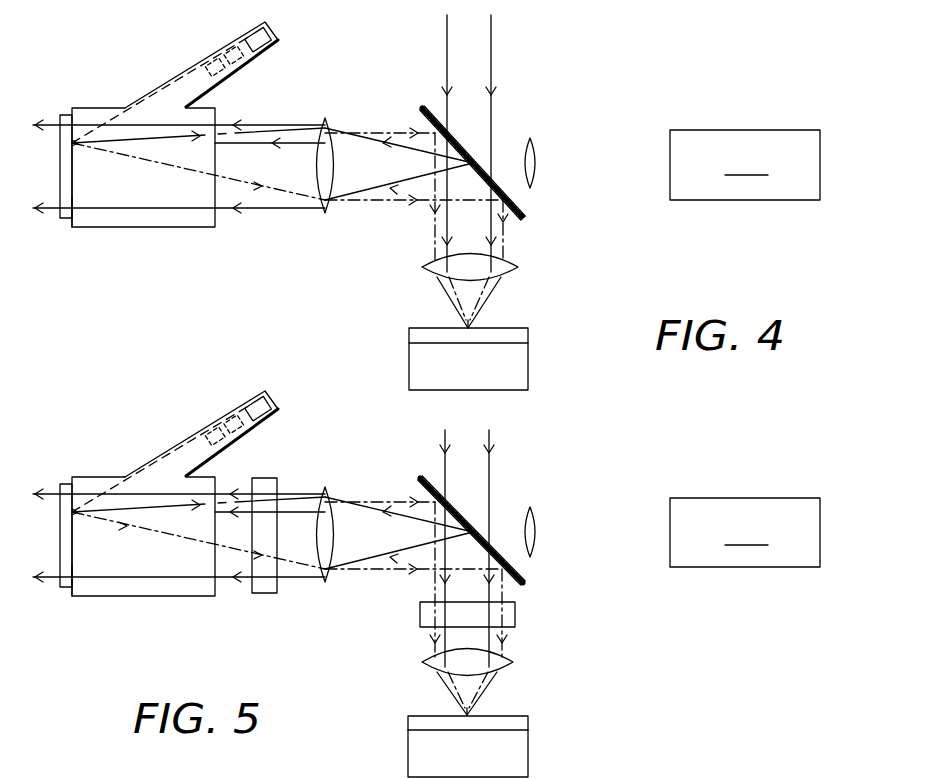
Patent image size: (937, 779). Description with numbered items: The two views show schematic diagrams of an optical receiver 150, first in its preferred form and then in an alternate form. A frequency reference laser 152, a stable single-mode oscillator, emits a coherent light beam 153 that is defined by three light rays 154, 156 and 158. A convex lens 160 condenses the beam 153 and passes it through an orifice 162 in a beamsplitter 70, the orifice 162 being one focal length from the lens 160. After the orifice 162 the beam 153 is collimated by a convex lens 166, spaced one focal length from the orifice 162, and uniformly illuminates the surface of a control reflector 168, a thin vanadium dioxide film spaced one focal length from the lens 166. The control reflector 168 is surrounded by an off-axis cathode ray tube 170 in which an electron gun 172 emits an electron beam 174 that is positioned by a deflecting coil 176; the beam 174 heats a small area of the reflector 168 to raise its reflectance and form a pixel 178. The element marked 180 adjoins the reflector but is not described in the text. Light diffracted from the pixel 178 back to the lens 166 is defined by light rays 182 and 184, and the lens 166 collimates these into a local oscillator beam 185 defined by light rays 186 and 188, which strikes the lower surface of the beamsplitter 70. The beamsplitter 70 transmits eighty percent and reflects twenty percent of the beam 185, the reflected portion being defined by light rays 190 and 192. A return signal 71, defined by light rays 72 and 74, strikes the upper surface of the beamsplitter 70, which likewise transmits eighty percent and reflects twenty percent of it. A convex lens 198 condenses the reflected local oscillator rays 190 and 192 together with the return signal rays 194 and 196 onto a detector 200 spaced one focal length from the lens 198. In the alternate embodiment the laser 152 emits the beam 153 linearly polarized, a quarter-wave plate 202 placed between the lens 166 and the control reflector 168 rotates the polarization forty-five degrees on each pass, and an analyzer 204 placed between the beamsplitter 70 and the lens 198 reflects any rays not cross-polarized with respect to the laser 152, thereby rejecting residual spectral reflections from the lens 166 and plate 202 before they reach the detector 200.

In FIG. 4, the beamsplitter 70 is at (533, 211).
In FIG. 5, the beamsplitter 70 is at (523, 566).
In FIG. 4, the return signal 71 is at (478, 53).
In FIG. 5, the return signal 71 is at (478, 472).
In FIG. 4, the light ray 72 is at (448, 43).
In FIG. 5, the light ray 72 is at (444, 440).
In FIG. 4, the light ray 74 is at (492, 70).
In FIG. 5, the light ray 74 is at (492, 442).
In FIG. 4, the optical receiver 150 is at (648, 45).
In FIG. 4, the frequency reference laser 152 is at (745, 165).
In FIG. 5, the frequency reference laser 152 is at (745, 532).
In FIG. 4, the coherent light beam 153 is at (353, 180).
In FIG. 5, the coherent light beam 153 is at (350, 550).
In FIG. 4, the light ray 154 is at (287, 125).
In FIG. 5, the light ray 154 is at (296, 495).
In FIG. 4, the light ray 156 is at (262, 210).
In FIG. 5, the light ray 156 is at (245, 582).
In FIG. 4, the light ray 158 is at (290, 145).
In FIG. 5, the light ray 158 is at (297, 514).
In FIG. 4, the convex lens 160 is at (532, 138).
In FIG. 5, the convex lens 160 is at (530, 507).
In FIG. 4, the orifice 162 is at (473, 157).
In FIG. 5, the orifice 162 is at (471, 530).
In FIG. 4, the convex lens 166 is at (327, 125).
In FIG. 5, the convex lens 166 is at (327, 494).
In FIG. 4, the control reflector 168 is at (72, 213).
In FIG. 5, the control reflector 168 is at (72, 583).
In FIG. 4, the off-axis cathode ray tube 170 is at (187, 228).
In FIG. 5, the off-axis cathode ray tube 170 is at (192, 597).
In FIG. 4, the electron gun 172 is at (227, 28).
In FIG. 5, the electron gun 172 is at (220, 420).
In FIG. 4, the electron beam 174 is at (132, 108).
In FIG. 5, the electron beam 174 is at (132, 477).
In FIG. 4, the deflecting coil 176 is at (188, 78).
In FIG. 5, the deflecting coil 176 is at (188, 446).
In FIG. 4, the pixel 178 is at (73, 144).
In FIG. 5, the pixel 178 is at (73, 514).
In FIG. 4, the exit window plate 180 is at (63, 115).
In FIG. 5, the exit window plate 180 is at (62, 485).
In FIG. 4, the light ray 182 is at (176, 167).
In FIG. 5, the light ray 182 is at (185, 540).
In FIG. 4, the light ray 184 is at (250, 133).
In FIG. 5, the light ray 184 is at (243, 504).
In FIG. 4, the local oscillator beam 185 is at (418, 132).
In FIG. 5, the local oscillator beam 185 is at (400, 503).
In FIG. 4, the light ray 186 is at (372, 128).
In FIG. 5, the light ray 186 is at (418, 500).
In FIG. 4, the light ray 188 is at (397, 202).
In FIG. 5, the light ray 188 is at (420, 572).
In FIG. 4, the light ray 190 is at (430, 245).
In FIG. 5, the light ray 190 is at (433, 633).
In FIG. 4, the light ray 192 is at (503, 250).
In FIG. 5, the light ray 192 is at (502, 650).
In FIG. 4, the light ray 194 is at (438, 252).
In FIG. 5, the light ray 194 is at (440, 650).
In FIG. 4, the light ray 196 is at (517, 231).
In FIG. 5, the light ray 196 is at (495, 635).
In FIG. 4, the convex lens 198 is at (483, 268).
In FIG. 5, the convex lens 198 is at (447, 676).
In FIG. 4, the detector 200 is at (528, 356).
In FIG. 5, the detector 200 is at (528, 728).
In FIG. 5, the quarter-wave plate 202 is at (267, 485).
In FIG. 5, the analyzer 204 is at (505, 610).